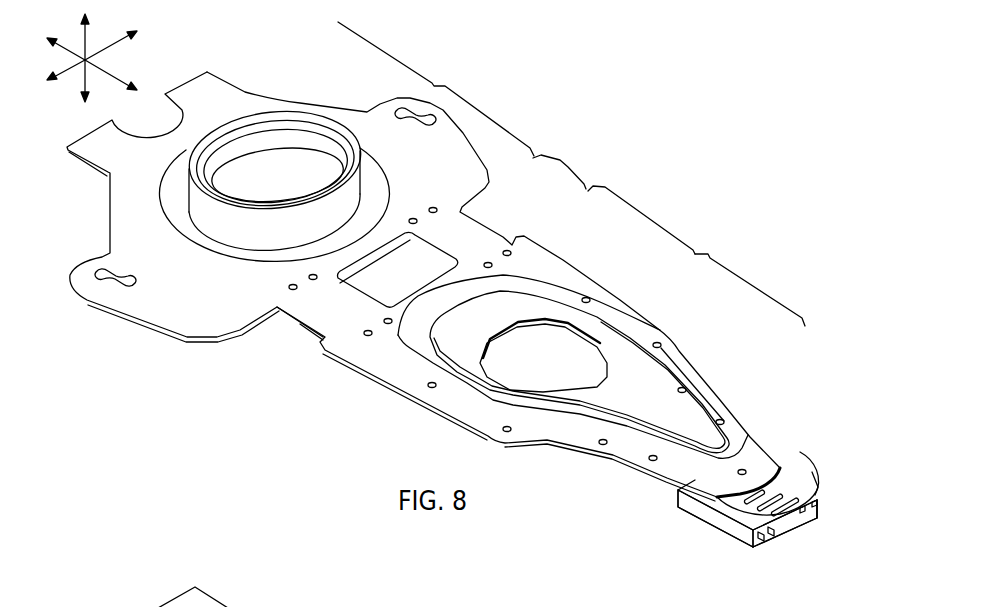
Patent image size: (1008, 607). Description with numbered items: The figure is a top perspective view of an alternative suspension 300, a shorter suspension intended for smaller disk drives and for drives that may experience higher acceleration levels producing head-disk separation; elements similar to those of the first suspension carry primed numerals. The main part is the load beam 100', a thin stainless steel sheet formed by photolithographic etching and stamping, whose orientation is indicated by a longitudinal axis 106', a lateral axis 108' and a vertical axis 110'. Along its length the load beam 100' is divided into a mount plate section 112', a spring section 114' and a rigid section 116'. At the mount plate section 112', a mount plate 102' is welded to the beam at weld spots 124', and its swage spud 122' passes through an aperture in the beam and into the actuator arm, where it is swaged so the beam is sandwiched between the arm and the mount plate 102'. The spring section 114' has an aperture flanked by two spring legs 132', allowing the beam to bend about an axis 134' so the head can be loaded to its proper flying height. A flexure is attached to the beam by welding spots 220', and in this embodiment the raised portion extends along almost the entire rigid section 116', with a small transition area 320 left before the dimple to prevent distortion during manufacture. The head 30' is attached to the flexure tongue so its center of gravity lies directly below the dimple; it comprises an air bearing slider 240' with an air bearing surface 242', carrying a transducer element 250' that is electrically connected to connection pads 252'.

The head 30' is at (711, 516).
The load beam 100' is at (423, 282).
The mount plate 102' is at (286, 346).
The longitudinal axis 106' is at (88, 73).
The lateral axis 108' is at (102, 55).
The vertical axis 110' is at (104, 52).
The mount plate section 112' is at (436, 89).
The spring section 114' is at (614, 193).
The rigid section 116' is at (750, 274).
The swage spud 122' is at (274, 173).
The weld spots 124' is at (334, 225).
The spring legs 132' is at (410, 280).
The bending axis 134' is at (398, 269).
The welding spots 220' is at (559, 356).
The air bearing slider 240' is at (699, 534).
The air bearing surface 242' is at (756, 544).
The transducer element 250' is at (806, 541).
The connection pads 252' is at (779, 511).
The suspension 300 is at (327, 418).
The transition area 320 is at (738, 468).